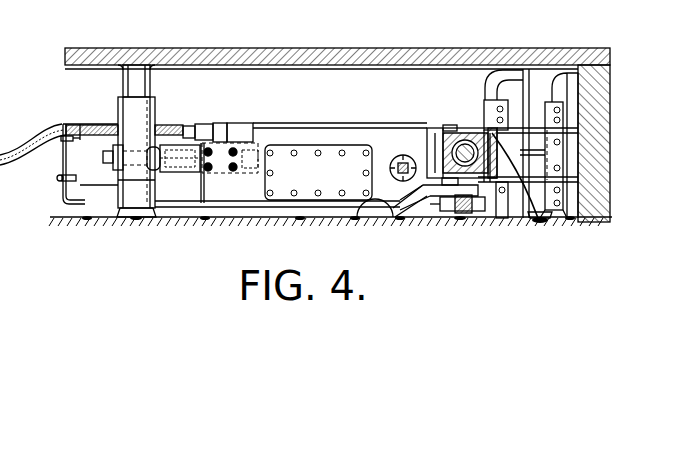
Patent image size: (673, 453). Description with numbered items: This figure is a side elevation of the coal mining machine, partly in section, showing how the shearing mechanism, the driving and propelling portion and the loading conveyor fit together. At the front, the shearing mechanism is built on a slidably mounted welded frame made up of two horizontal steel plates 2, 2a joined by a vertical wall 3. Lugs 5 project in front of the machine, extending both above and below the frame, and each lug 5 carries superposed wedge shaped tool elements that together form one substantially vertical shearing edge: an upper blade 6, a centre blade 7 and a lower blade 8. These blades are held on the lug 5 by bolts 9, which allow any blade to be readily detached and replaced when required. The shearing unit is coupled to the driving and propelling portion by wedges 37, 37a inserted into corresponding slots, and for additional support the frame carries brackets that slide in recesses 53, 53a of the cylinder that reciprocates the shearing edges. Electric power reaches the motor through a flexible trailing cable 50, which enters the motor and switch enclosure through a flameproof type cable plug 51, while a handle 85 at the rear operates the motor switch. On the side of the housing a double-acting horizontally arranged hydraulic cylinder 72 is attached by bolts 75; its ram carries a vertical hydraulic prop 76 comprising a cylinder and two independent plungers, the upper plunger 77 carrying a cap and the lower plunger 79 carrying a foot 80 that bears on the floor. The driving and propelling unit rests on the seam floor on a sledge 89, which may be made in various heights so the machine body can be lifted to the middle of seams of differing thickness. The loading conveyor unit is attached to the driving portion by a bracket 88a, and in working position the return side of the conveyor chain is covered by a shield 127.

The horizontal steel plate 2 is at (528, 114).
The horizontal steel plate 2a is at (547, 222).
The vertical wall 3 is at (536, 198).
The lug 5 is at (547, 155).
The upper blade 6 is at (573, 108).
The centre blade 7 is at (572, 162).
The lower blade 8 is at (573, 202).
The bolts 9 is at (557, 142).
The wedge 37 is at (445, 128).
The wedge 37a is at (437, 170).
The flexible trailing cable 50 is at (50, 128).
The cable plug 51 is at (208, 133).
The recess 53 is at (487, 130).
The recess 53a is at (491, 187).
The hydraulic cylinder 72 is at (183, 166).
The bolts 75 is at (237, 168).
The vertical hydraulic prop 76 is at (138, 108).
The upper plunger 77 is at (140, 80).
The lower plunger 79 is at (138, 188).
The foot 80 is at (143, 209).
The handle 85 is at (72, 140).
The bracket 88a is at (432, 190).
The sledge 89 is at (312, 206).
The shield 127 is at (366, 208).